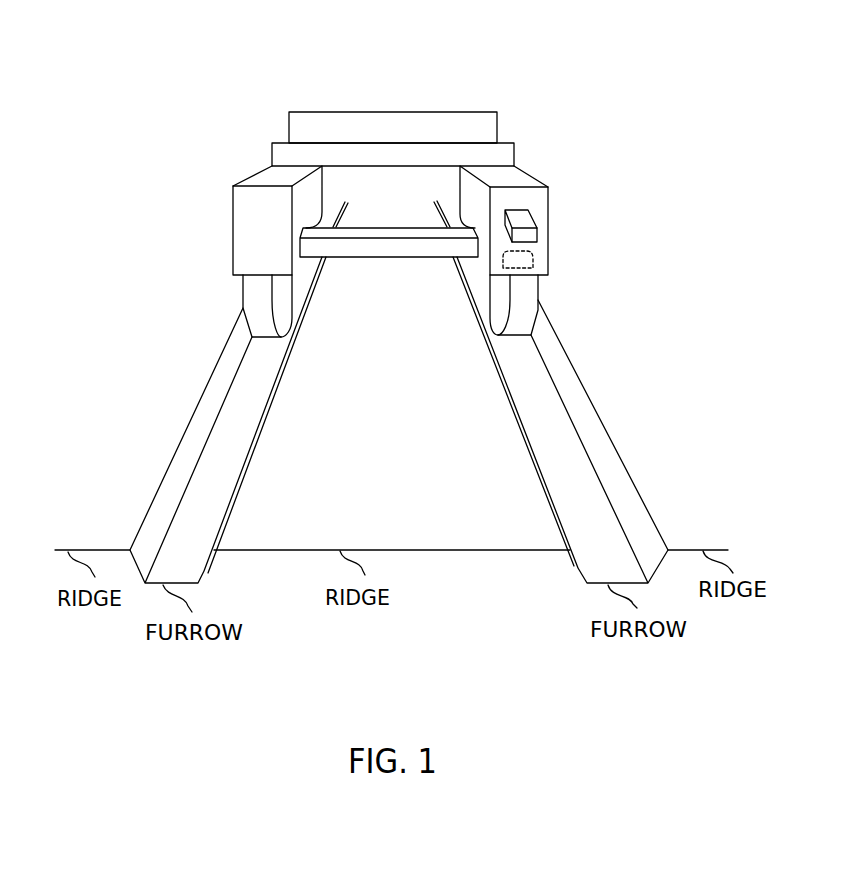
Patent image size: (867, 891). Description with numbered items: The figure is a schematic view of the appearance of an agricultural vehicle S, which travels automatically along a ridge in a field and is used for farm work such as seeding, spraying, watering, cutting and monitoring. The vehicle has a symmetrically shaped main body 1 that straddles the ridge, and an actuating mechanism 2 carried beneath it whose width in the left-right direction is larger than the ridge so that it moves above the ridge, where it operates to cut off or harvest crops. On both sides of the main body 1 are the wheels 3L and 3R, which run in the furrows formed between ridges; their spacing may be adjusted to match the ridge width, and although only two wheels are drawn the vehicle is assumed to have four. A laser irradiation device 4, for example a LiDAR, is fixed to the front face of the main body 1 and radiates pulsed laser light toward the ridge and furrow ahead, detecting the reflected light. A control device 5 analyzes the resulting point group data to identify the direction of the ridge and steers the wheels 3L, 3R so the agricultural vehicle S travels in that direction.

The agricultural vehicle S is at (420, 68).
The main body 1 is at (549, 195).
The actuating mechanism 2 is at (390, 258).
The wheel 3R is at (243, 287).
The wheel 3L is at (542, 298).
The laser irradiation device 4 is at (537, 232).
The control device 5 is at (533, 265).